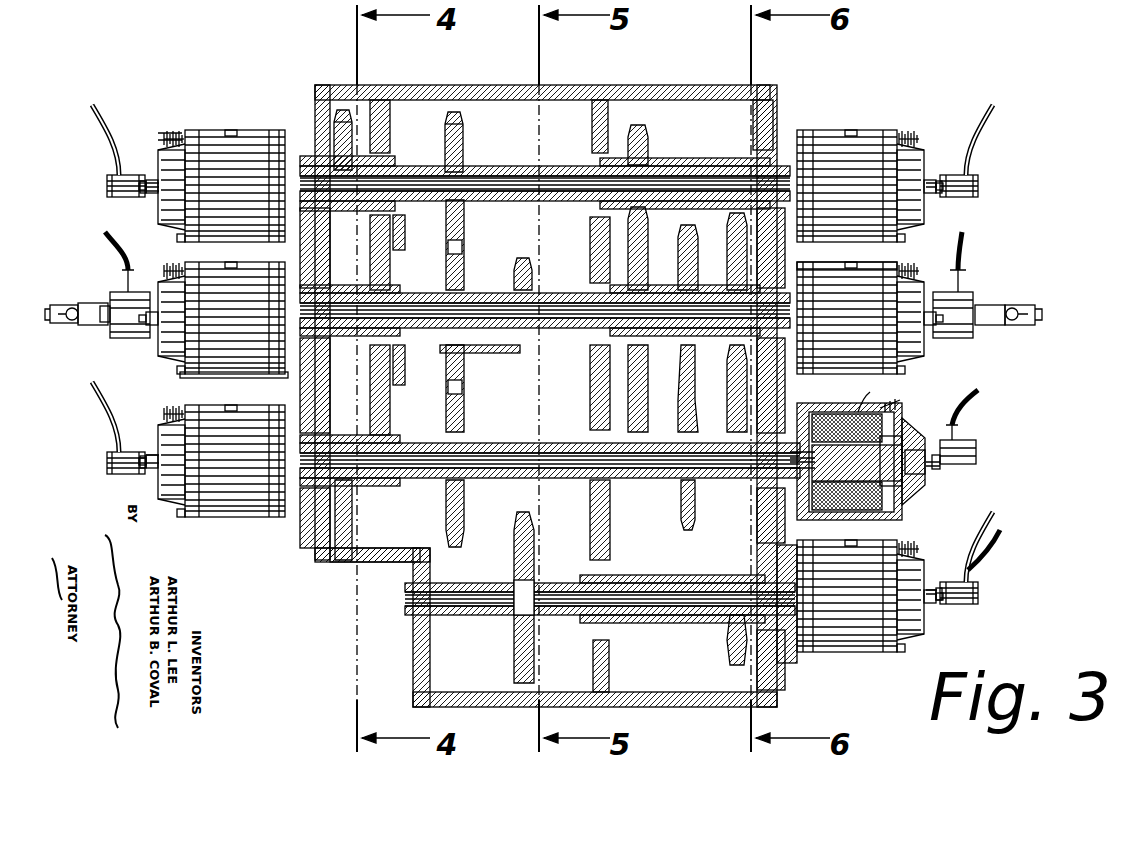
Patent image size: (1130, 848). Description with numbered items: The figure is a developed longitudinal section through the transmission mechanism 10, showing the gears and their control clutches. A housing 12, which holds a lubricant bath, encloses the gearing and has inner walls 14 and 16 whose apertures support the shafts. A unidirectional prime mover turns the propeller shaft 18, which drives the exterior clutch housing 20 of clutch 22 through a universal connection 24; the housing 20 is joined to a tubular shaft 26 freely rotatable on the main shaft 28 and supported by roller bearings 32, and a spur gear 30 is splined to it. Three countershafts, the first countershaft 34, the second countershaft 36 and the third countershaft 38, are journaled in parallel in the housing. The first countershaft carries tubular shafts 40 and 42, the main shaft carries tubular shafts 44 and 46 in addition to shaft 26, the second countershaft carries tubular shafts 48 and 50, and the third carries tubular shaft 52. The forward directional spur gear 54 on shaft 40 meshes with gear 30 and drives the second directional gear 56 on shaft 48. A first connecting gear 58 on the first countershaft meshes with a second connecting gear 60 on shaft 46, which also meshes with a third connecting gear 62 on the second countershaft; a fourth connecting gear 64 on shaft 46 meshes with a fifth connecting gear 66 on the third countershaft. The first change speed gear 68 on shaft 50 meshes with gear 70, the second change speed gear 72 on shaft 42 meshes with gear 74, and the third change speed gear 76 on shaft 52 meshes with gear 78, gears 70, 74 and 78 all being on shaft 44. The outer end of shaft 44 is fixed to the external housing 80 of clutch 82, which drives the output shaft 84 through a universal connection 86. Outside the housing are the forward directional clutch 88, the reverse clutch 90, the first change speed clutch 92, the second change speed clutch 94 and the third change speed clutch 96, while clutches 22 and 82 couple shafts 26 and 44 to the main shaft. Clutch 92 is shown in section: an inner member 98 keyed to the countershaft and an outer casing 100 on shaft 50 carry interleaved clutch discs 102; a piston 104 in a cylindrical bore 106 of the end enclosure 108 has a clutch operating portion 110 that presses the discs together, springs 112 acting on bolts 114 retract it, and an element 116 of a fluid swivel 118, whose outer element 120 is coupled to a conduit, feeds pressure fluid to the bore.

The transmission mechanism 10 is at (1000, 80).
The housing 12 is at (770, 92).
The inner partition or wall 14 is at (392, 120).
The inner partition or wall 16 is at (610, 108).
The propeller shaft 18 is at (55, 305).
The clutch housing 20 is at (230, 372).
The clutch 22 is at (270, 378).
The universal connection 24 is at (85, 303).
The tubular shaft 26 is at (385, 365).
The main shaft 28 is at (478, 300).
The spur gear 30 is at (390, 260).
The roller bearings 32 is at (392, 288).
The first countershaft 34 is at (510, 176).
The second countershaft 36 is at (522, 455).
The third countershaft 38 is at (490, 616).
The tubular shaft 40 is at (395, 168).
The tubular shaft 42 is at (698, 166).
The tubular shaft 44 is at (664, 286).
The tubular shaft 46 is at (490, 353).
The tubular shaft 48 is at (395, 440).
The tubular shaft 50 is at (648, 440).
The tubular shaft 52 is at (648, 575).
The forward directional spur gear 54 is at (340, 120).
The second directional gear 56 is at (335, 540).
The first connecting gear 58 is at (463, 135).
The second connecting gear 60 is at (463, 248).
The third connecting gear 62 is at (464, 525).
The fourth connecting gear 64 is at (533, 270).
The fifth connecting gear 66 is at (535, 550).
The first change speed gear 68 is at (680, 512).
The gear 70 is at (698, 262).
The second change speed gear 72 is at (650, 145).
The gear 74 is at (648, 250).
The third change speed gear 76 is at (727, 650).
The gear 78 is at (730, 395).
The external housing 80 is at (812, 372).
The clutch 82 is at (895, 265).
The output shaft 84 is at (1038, 310).
The universal connection 86 is at (995, 305).
The forward directional clutch 88 is at (255, 130).
The reverse clutch 90 is at (245, 517).
The first change speed clutch 92 is at (923, 445).
The second change speed clutch 94 is at (845, 130).
The third change speed clutch 96 is at (832, 652).
The inner member 98 is at (928, 445).
The outer clutch housing or casing 100 is at (852, 522).
The clutch discs or plates 102 is at (849, 444).
The piston 104 is at (915, 440).
The cylindrical bore 106 is at (915, 480).
The end enclosure 108 is at (928, 470).
The clutch operating portion 110 is at (890, 405).
The springs 112 is at (174, 131).
The bolts 114 is at (160, 138).
The element of fluid swivel 116 is at (150, 175).
The fluid swivel 118 is at (145, 192).
The outer element of swivel 120 is at (107, 182).